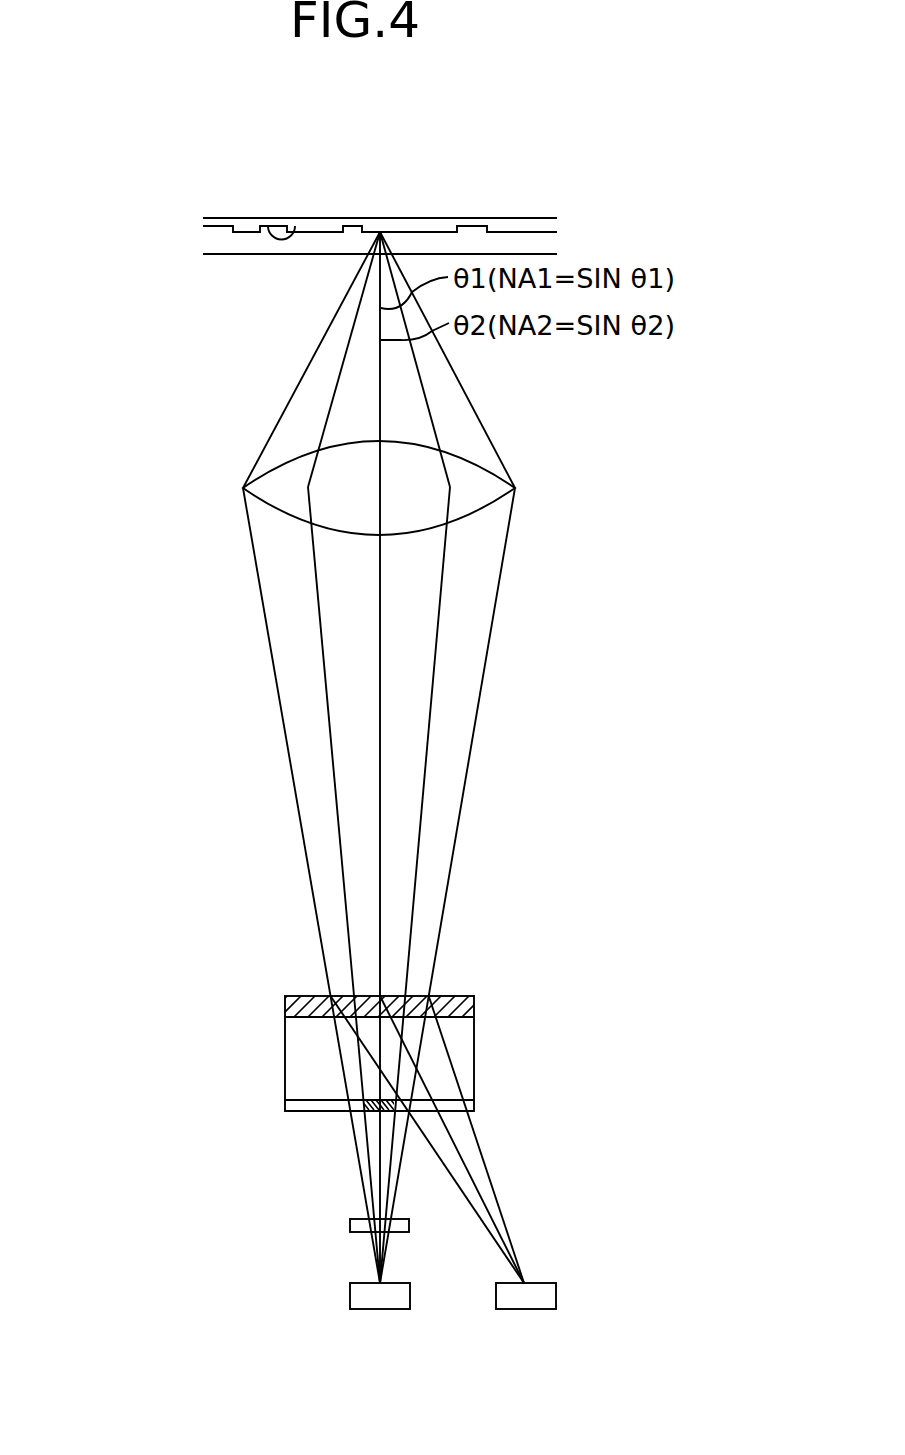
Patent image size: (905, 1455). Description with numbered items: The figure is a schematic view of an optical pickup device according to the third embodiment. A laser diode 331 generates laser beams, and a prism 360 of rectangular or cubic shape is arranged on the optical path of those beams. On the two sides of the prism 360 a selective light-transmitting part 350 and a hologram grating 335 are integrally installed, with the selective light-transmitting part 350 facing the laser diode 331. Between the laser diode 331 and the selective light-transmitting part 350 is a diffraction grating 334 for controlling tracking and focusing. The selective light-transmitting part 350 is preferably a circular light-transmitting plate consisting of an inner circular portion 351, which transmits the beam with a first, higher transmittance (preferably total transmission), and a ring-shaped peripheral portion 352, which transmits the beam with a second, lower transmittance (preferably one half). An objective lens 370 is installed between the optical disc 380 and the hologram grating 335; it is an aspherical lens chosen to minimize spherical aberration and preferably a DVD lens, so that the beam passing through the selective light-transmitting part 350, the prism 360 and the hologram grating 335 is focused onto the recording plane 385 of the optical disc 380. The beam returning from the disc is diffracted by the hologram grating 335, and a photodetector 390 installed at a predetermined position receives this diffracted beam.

The optical disc 380 is at (220, 236).
The recording plane 385 is at (300, 233).
The objective lens 370 is at (473, 502).
The prism 360 is at (303, 1056).
The hologram grating 335 is at (287, 995).
The selective light-transmitting part 350 is at (308, 1100).
The peripheral portion 352 is at (315, 1108).
The inner circular portion 351 is at (368, 1109).
The diffraction grating 334 is at (350, 1232).
The laser diode 331 is at (377, 1309).
The photodetector 390 is at (520, 1309).